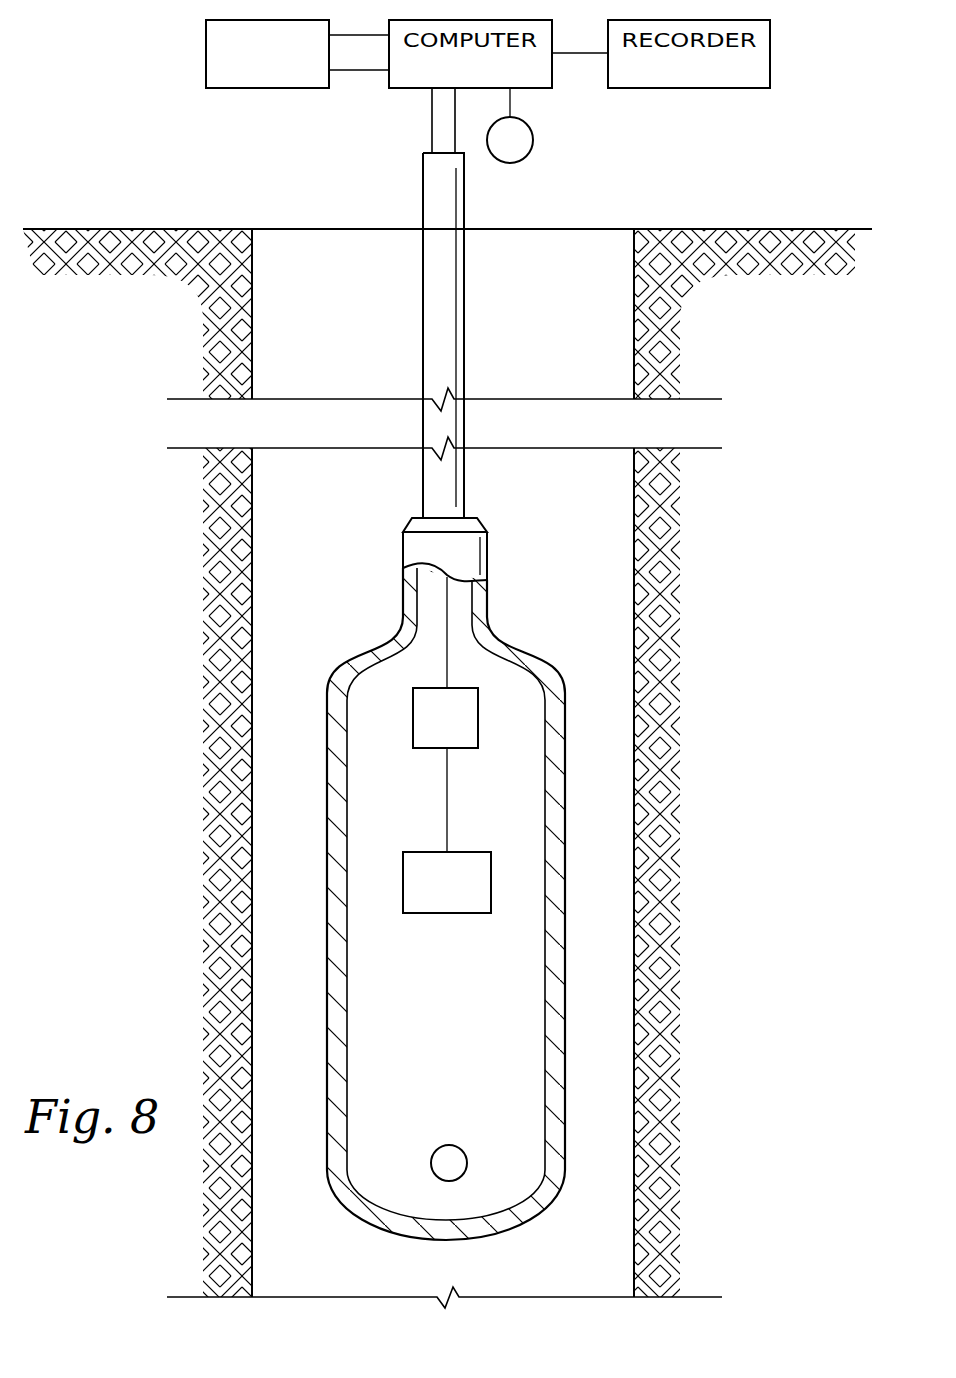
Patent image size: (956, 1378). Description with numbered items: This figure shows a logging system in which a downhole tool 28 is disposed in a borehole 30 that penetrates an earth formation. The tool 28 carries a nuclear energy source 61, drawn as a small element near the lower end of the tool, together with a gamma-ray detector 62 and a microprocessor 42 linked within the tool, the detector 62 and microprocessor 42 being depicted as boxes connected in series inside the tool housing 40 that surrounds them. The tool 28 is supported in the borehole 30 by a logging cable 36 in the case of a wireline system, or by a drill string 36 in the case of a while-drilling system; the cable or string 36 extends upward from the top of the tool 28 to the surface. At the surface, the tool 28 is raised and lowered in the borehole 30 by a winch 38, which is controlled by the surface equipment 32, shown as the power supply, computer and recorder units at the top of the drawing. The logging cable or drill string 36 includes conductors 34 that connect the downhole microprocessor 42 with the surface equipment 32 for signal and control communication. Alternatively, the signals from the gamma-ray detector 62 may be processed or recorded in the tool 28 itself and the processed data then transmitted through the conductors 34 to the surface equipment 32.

The downhole tool 28 is at (419, 876).
The borehole 30 is at (634, 507).
The surface equipment 32 is at (206, 46).
The conductors 34 is at (432, 120).
The logging cable or drill string 36 is at (423, 188).
The winch 38 is at (533, 138).
The vacuum flask / insulated vessel 40 is at (497, 625).
The microprocessor 42 is at (434, 726).
The nuclear energy source 61 is at (449, 1145).
The gamma-ray detector 62 is at (435, 894).